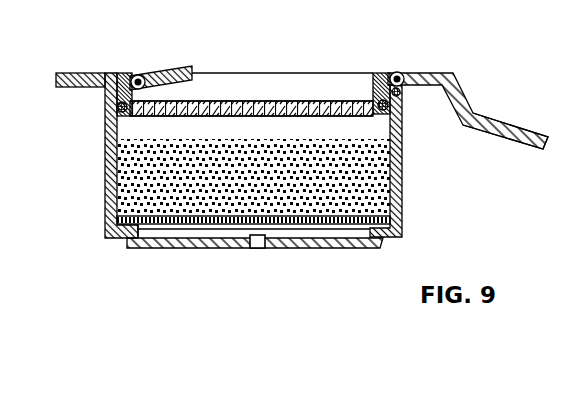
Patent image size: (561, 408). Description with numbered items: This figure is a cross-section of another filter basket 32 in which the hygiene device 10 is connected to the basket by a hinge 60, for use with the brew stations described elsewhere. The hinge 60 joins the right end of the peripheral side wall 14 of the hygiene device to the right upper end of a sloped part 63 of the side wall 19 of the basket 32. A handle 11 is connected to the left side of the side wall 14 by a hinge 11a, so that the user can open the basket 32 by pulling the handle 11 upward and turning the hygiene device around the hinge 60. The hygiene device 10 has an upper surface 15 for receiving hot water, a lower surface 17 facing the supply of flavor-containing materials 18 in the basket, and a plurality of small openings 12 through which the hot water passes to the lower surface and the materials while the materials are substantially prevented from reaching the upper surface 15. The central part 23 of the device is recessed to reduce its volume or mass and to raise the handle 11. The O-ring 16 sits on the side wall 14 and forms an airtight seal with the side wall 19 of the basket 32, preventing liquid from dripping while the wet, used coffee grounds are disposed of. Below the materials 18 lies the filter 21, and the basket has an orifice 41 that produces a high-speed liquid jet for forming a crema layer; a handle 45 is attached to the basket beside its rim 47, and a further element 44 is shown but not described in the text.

The hygiene device 10 is at (281, 66).
The handle 11 is at (174, 67).
The hinge 11a is at (136, 75).
The small openings 12 is at (318, 101).
The peripheral side wall 14 is at (100, 86).
The upper surface 15 is at (203, 101).
The O-ring 16 is at (373, 80).
The lower surface 17 is at (168, 117).
The flavor-containing materials 18 is at (377, 177).
The side wall 19 is at (105, 183).
The filter 21 is at (320, 226).
The central part 23 is at (253, 82).
The filter basket 32 is at (131, 264).
The orifice 41 is at (250, 247).
The screen 44 is at (276, 231).
The handle 45 is at (502, 122).
The rim 47 is at (433, 73).
The hinge 60 is at (397, 72).
The sloped part 63 is at (102, 92).